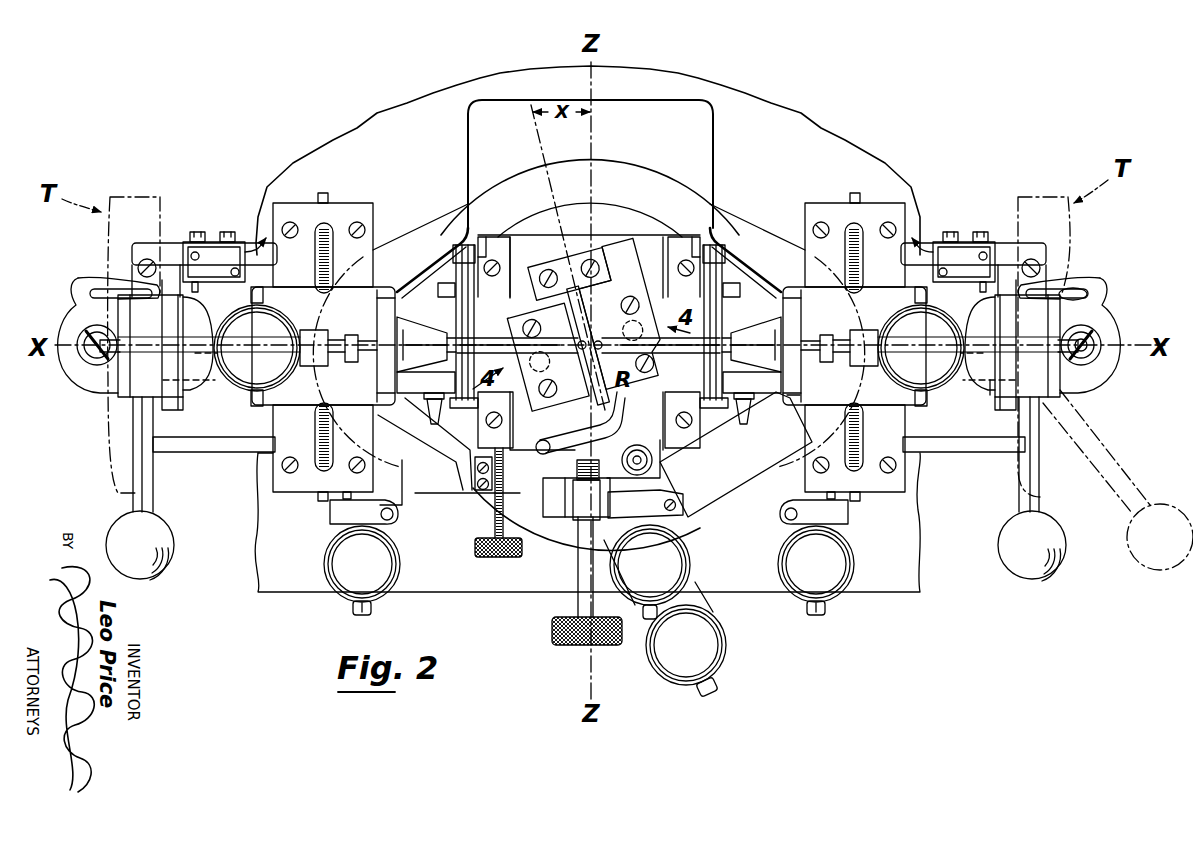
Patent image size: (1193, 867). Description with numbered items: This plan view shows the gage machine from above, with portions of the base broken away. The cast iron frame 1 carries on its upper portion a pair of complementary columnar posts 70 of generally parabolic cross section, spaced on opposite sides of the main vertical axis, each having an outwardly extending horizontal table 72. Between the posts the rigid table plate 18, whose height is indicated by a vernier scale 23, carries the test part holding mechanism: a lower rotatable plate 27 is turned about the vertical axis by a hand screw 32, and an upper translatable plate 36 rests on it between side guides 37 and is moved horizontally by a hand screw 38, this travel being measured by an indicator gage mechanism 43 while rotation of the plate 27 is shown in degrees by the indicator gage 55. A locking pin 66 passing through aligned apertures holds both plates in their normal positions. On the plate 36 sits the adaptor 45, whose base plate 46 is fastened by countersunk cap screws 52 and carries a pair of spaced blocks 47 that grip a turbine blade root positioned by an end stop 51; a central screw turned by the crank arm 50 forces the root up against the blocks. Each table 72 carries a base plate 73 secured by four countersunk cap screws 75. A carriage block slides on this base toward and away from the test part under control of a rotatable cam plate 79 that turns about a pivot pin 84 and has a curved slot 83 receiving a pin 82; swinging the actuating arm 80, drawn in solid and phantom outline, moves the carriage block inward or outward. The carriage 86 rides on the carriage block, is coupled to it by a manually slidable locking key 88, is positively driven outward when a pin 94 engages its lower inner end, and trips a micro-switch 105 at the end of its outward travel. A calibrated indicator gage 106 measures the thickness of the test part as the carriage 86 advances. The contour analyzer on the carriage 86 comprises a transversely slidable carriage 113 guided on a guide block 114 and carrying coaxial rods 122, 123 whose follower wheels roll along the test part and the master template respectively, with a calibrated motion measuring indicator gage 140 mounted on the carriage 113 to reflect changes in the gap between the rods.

The cast iron frame 1 is at (832, 121).
The table plate 18 is at (533, 205).
The columnar posts 70 is at (412, 233).
The upper translatable plate 36 is at (614, 232).
The lower rotatable plate 27 is at (603, 212).
The adaptor 45 is at (567, 246).
The guide block 114 is at (283, 206).
The transversely slidable carriage 113 is at (297, 287).
The pin 82 is at (222, 378).
The micro-switch 105 is at (208, 254).
The countersunk cap screws 75 is at (136, 262).
The rotatable cam plate 79 is at (86, 286).
The curved slot 83 is at (1073, 292).
The pivot pin 84 is at (1096, 368).
The calibrated motion measuring indicator gage 140 is at (246, 392).
The actuating arm 80 is at (150, 507).
The horizontal tables 72 is at (190, 448).
The base plate 73 is at (234, 433).
The calibrated motion measuring indicator gage 106 is at (333, 600).
The indicator gage mechanism 43 is at (690, 532).
The calibrated motion measuring indicator gage 55 is at (740, 655).
The inner rod 122 is at (452, 332).
The carriage 86 is at (440, 391).
The pin 94 is at (797, 402).
The outer rod 123 is at (993, 392).
The locking key 88 is at (433, 428).
The locking pin 66 is at (648, 460).
The vernier scale 23 is at (432, 495).
The hand screw 32 is at (492, 527).
The side guides 37 is at (500, 246).
The spaced blocks 47 is at (540, 281).
The end stop 51 is at (557, 264).
The countersunk cap screws 52 is at (586, 349).
The base plate 46 is at (617, 395).
The crank arm 50 is at (635, 455).
The hand screw 38 is at (577, 608).